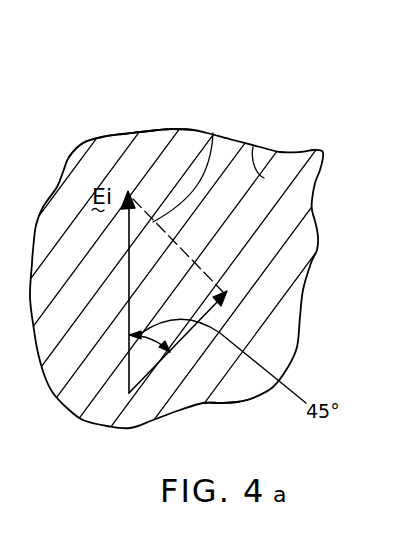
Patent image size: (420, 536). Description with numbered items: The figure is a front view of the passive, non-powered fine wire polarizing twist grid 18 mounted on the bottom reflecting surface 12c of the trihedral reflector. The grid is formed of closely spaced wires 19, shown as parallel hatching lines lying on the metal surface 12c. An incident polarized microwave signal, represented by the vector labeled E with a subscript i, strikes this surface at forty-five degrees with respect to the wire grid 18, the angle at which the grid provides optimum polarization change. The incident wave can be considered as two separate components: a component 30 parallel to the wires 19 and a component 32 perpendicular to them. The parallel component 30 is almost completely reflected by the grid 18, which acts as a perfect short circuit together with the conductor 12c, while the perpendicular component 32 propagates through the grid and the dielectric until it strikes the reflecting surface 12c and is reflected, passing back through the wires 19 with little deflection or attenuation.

The polarizing twist grid 18 is at (315, 291).
The bottom surface 12c is at (147, 157).
The perpendicular component 32 is at (213, 133).
The wires 19 is at (253, 147).
The parallel component 30 is at (178, 336).